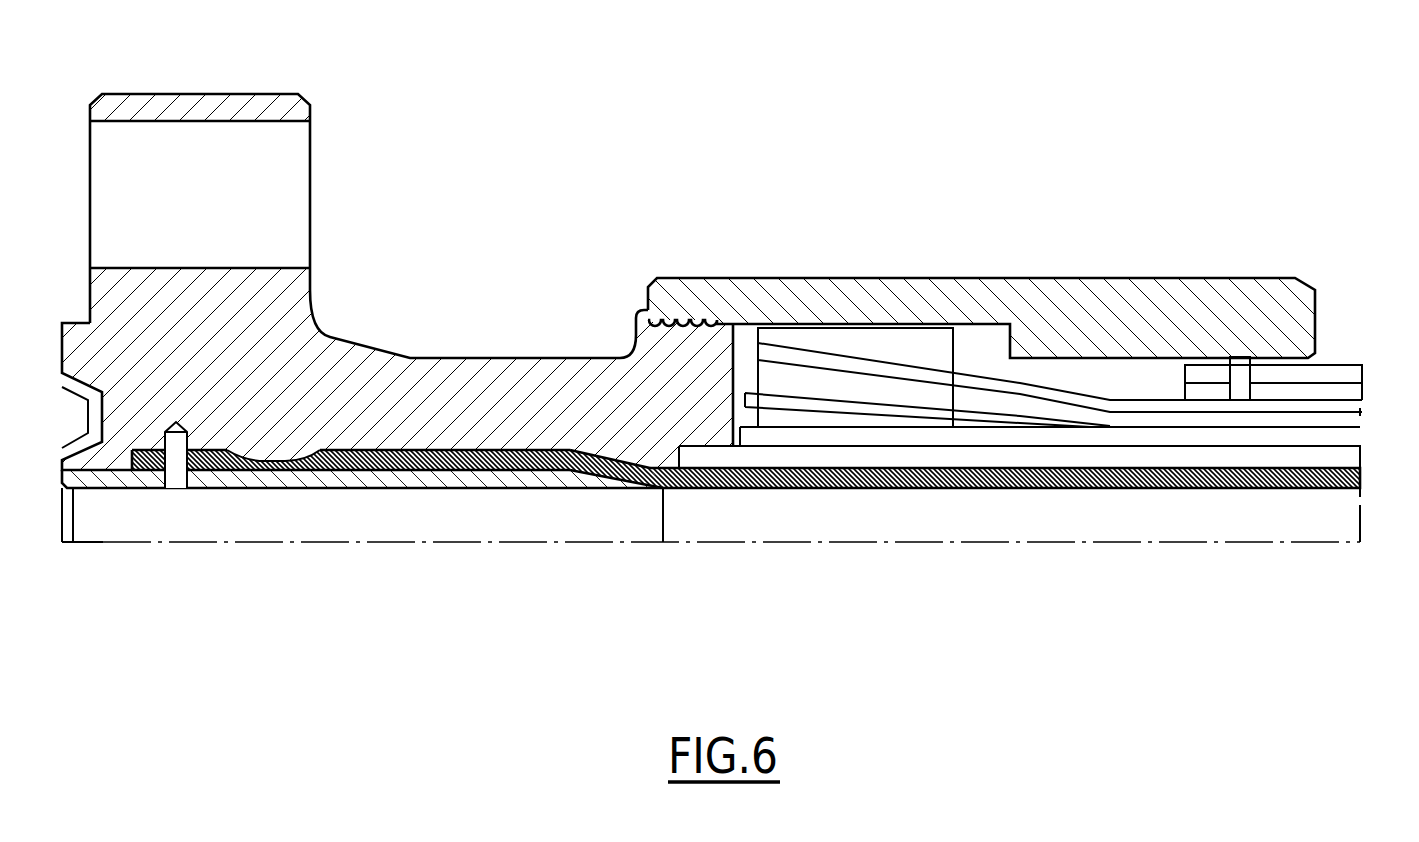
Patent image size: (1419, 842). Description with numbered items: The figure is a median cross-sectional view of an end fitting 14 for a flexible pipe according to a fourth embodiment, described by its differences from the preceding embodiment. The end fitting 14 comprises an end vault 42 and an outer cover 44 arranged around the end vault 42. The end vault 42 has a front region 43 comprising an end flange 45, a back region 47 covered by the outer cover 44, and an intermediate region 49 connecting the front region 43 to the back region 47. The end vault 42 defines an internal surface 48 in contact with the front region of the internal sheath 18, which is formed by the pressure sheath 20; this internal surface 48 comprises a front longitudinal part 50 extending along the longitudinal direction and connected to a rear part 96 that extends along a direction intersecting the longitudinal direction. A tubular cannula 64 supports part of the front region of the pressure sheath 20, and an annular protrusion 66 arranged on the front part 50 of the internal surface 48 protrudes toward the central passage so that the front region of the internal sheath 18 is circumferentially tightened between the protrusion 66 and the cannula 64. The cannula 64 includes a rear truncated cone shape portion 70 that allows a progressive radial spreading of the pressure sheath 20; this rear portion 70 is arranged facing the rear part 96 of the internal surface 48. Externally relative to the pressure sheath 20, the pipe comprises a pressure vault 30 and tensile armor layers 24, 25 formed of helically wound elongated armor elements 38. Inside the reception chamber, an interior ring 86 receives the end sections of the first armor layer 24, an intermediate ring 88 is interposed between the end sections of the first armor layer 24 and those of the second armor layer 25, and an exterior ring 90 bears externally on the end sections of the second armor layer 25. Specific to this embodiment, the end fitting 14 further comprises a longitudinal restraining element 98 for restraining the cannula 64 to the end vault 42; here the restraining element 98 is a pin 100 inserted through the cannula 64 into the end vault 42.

The end fitting 14 is at (796, 160).
The internal sheath 18 is at (1176, 478).
The pressure sheath 20 is at (1312, 478).
The first armor layer 24 is at (1347, 420).
The second armor layer 25 is at (1322, 407).
The pressure vault 30 is at (1340, 459).
The elongated armor element 38 is at (1000, 413).
The end vault 42 is at (237, 318).
The front region 43 is at (339, 228).
The outer cover 44 is at (921, 292).
The end flange 45 is at (252, 108).
The back region 47 is at (1033, 248).
The internal surface 48 is at (492, 448).
The intermediate region 49 is at (547, 290).
The front longitudinal part 50 is at (408, 452).
The cannula 64 is at (387, 476).
The annular protrusion 66 is at (297, 450).
The rear truncated cone shape portion 70 is at (585, 478).
The interior ring 86 is at (774, 417).
The intermediate ring 88 is at (875, 387).
The exterior ring 90 is at (863, 348).
The rear part 96 is at (587, 447).
The longitudinal restraining element 98 is at (173, 475).
The pin 100 is at (173, 452).